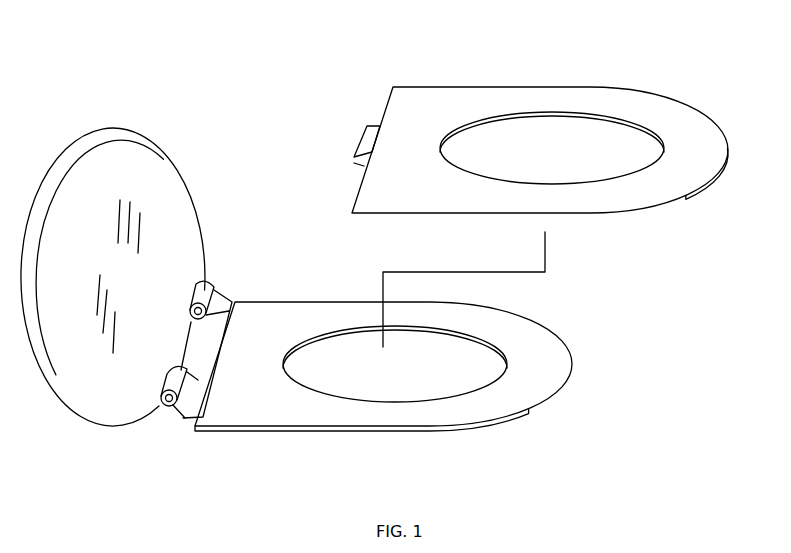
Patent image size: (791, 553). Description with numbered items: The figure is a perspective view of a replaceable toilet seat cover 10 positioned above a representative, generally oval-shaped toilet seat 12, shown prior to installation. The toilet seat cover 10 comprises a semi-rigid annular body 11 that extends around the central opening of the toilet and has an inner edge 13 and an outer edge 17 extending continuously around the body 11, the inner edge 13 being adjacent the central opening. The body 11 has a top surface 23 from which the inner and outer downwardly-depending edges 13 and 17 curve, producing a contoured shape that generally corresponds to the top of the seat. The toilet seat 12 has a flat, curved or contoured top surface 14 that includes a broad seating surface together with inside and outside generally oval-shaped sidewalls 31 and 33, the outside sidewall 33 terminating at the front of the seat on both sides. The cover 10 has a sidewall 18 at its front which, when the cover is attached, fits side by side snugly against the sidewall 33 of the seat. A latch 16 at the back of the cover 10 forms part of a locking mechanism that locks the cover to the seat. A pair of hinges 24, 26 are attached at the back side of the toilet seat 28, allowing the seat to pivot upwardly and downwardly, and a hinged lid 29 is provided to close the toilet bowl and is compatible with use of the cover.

The replaceable toilet seat cover 10 is at (539, 160).
The semi-rigid annular body 11 is at (408, 107).
The toilet seat 12 is at (422, 357).
The inner edge 13 is at (572, 120).
The top surface 14 is at (543, 357).
The latch 16 is at (362, 137).
The outer edge 17 is at (637, 205).
The sidewall 18 is at (727, 148).
The top surface 23 is at (683, 120).
The hinge 24 is at (172, 405).
The hinge 26 is at (207, 283).
The back side of toilet seat 28 is at (243, 354).
The hinged lid 29 is at (132, 170).
The inside sidewall 31 is at (460, 340).
The outside sidewall 33 is at (450, 423).